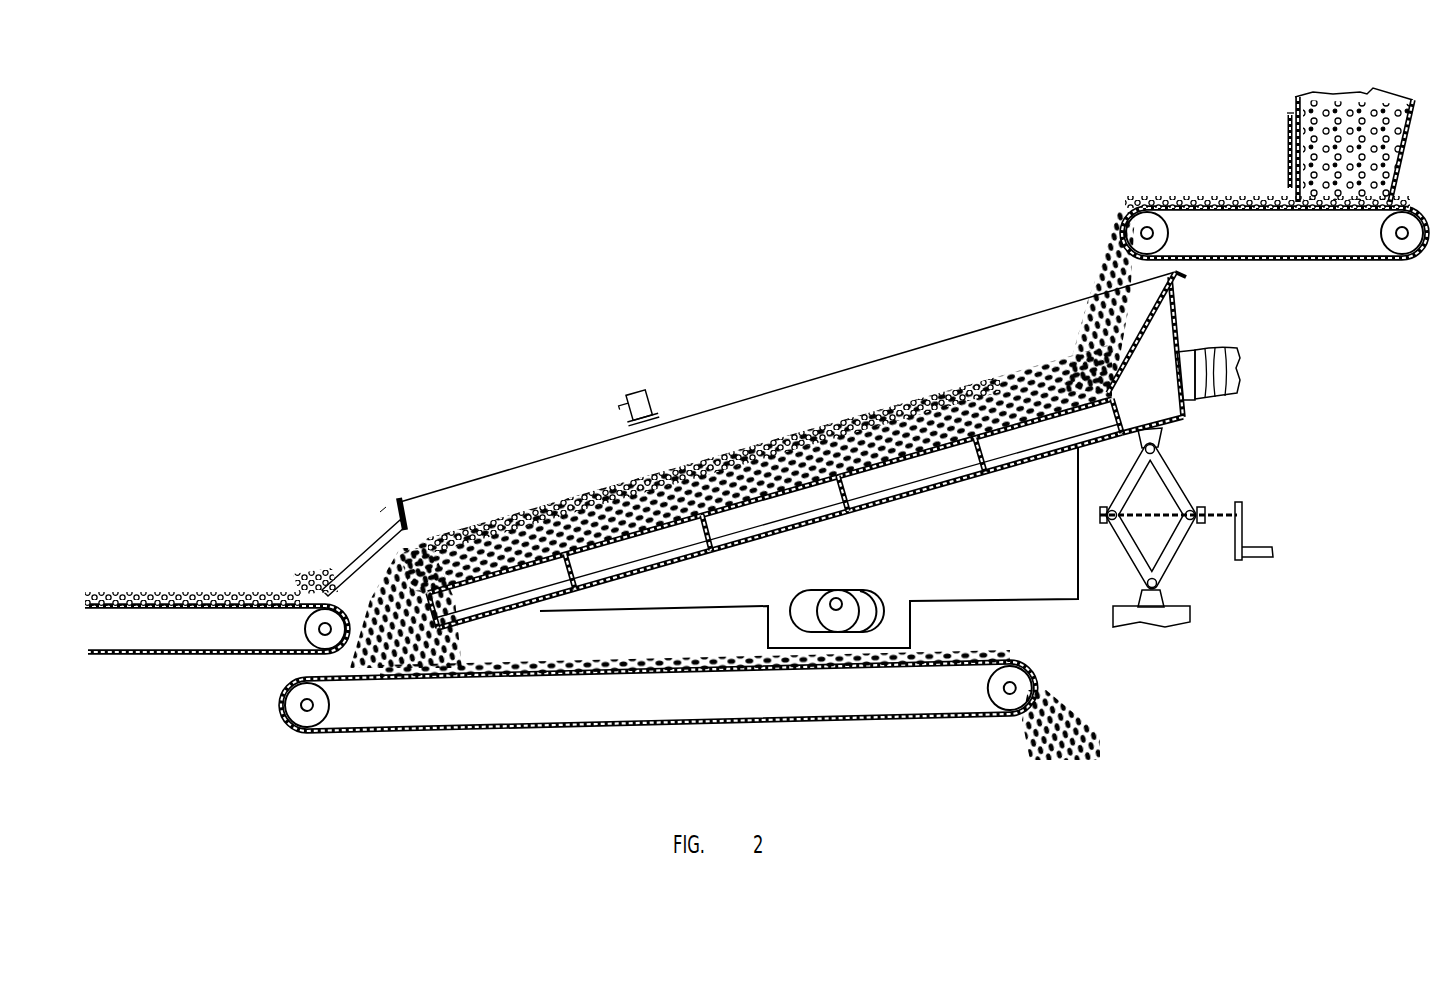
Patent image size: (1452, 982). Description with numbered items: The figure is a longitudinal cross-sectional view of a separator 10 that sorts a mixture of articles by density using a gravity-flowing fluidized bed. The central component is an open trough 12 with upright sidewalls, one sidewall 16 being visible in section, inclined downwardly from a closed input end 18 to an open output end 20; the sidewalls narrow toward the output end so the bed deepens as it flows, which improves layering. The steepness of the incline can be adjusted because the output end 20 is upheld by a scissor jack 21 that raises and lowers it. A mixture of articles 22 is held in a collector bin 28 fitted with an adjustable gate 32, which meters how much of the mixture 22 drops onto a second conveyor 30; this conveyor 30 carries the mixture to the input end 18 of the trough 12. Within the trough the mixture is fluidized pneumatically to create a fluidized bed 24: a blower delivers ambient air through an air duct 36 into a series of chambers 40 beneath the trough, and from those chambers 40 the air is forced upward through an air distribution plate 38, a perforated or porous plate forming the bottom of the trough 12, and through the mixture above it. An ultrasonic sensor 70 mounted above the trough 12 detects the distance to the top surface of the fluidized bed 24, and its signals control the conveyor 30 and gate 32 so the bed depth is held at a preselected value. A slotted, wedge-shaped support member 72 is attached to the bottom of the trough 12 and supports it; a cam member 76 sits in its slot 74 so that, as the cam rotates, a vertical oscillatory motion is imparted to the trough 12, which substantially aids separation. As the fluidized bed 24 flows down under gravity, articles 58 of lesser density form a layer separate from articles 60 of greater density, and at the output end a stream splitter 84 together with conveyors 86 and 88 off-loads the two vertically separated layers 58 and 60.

The separator 10 is at (1000, 258).
The open trough 12 is at (380, 509).
The upright sidewall 16 is at (921, 383).
The closed input end 18 is at (1152, 295).
The open output end 20 is at (402, 498).
The scissor jack 21 is at (1195, 475).
The mixture of articles 22 is at (1373, 93).
The fluidized bed 24 is at (778, 455).
The collector bin 28 is at (1405, 133).
The second conveyor 30 is at (1307, 262).
The adjustable gate 32 is at (1283, 138).
The air duct 36 is at (1215, 348).
The air distribution plate 38 is at (898, 472).
The chambers 40 is at (540, 578).
The articles of lesser density 58 is at (373, 543).
The articles of greater density 60 is at (395, 567).
The ultrasonic sensor 70 is at (657, 410).
The wedge-shaped support member 72 is at (1027, 570).
The slot 74 is at (868, 600).
The cam member 76 is at (848, 600).
The stream splitter 84 is at (323, 569).
The conveyor 86 is at (188, 657).
The conveyor 88 is at (423, 727).